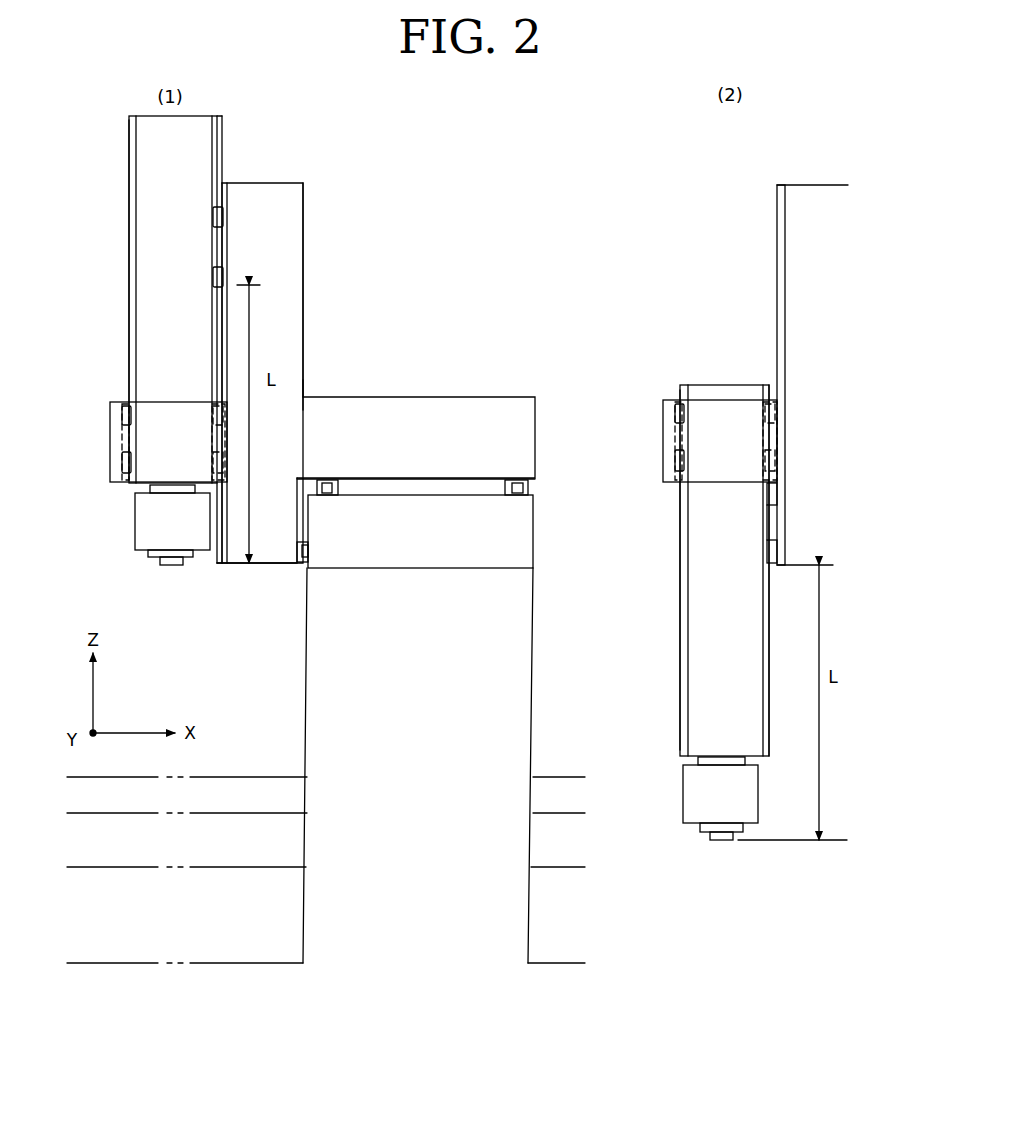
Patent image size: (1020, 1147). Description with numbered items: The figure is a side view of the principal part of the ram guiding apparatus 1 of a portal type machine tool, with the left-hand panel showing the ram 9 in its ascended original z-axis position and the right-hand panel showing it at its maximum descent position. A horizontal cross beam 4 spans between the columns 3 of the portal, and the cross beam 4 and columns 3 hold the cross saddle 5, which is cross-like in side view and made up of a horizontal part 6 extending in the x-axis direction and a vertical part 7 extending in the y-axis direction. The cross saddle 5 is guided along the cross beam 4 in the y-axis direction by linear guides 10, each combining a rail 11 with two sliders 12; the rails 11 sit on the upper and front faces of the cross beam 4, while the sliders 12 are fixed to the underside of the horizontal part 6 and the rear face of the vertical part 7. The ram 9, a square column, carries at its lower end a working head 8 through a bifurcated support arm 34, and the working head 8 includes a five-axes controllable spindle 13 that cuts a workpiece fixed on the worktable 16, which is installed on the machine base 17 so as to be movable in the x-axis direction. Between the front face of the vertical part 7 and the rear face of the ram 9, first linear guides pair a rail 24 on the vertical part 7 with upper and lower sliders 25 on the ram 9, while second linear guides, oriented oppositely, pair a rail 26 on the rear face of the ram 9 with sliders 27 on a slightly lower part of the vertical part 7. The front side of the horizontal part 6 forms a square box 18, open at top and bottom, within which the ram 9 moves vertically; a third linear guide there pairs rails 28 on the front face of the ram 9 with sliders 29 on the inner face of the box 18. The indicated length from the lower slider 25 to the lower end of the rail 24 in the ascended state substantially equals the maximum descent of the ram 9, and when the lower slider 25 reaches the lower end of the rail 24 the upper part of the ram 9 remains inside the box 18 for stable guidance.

The ram guiding apparatus 1 is at (397, 283).
The column 3 is at (535, 682).
The cross beam 4 is at (538, 550).
The cross saddle 5 is at (305, 407).
The horizontal part 6 is at (538, 412).
The vertical part 7 is at (290, 215).
The working head 8 is at (155, 556).
The ram 9 is at (145, 355).
The linear guide 10 is at (327, 481).
The rail 11 is at (525, 492).
The slider 12 is at (525, 486).
The spindle 13 is at (170, 566).
The worktable 16 is at (213, 777).
The machine base 17 is at (132, 867).
The box 18 is at (118, 458).
The rail 24 is at (224, 198).
The slider 25 is at (220, 272).
The rail 26 is at (222, 137).
The slider 27 is at (224, 412).
The rail 28 is at (129, 235).
The slider 29 is at (124, 412).
The support arm 34 is at (145, 522).